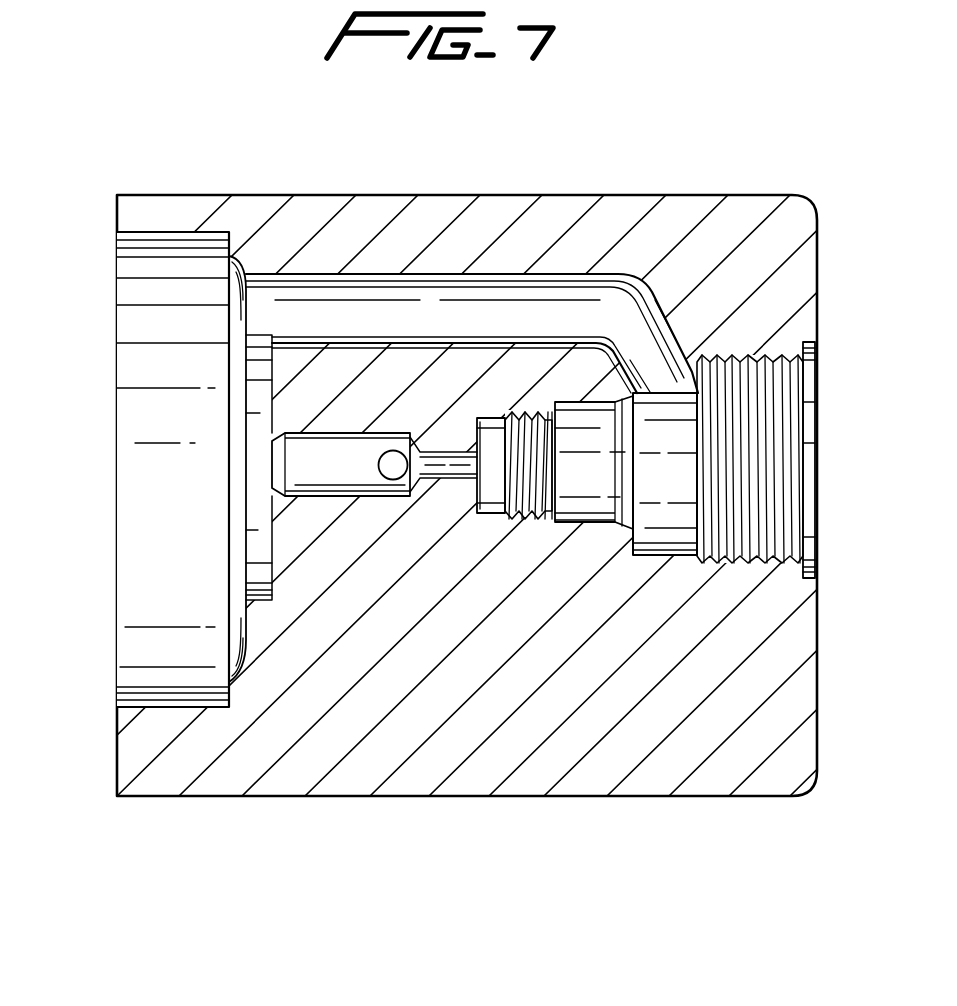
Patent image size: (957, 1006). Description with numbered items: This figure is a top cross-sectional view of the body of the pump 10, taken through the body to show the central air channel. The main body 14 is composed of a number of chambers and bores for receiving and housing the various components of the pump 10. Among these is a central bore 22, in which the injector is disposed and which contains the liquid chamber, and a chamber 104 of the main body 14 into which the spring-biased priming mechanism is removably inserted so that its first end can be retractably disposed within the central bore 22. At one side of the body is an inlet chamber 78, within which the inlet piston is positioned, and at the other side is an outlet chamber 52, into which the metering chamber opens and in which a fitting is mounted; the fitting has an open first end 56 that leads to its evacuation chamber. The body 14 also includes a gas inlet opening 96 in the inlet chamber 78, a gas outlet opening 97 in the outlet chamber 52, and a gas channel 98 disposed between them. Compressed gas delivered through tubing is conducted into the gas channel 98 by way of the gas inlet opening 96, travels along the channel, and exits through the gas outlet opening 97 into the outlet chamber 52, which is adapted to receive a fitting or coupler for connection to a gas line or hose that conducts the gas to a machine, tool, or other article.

The pump 10 is at (91, 181).
The main body 14 is at (524, 782).
The central bore 22 is at (313, 455).
The outlet chamber 52 is at (810, 427).
The open first end 56 is at (482, 455).
The inlet chamber 78 is at (118, 407).
The gas inlet opening 96 is at (238, 292).
The gas outlet opening 97 is at (668, 388).
The gas channel 98 is at (572, 295).
The chamber 104 is at (390, 452).